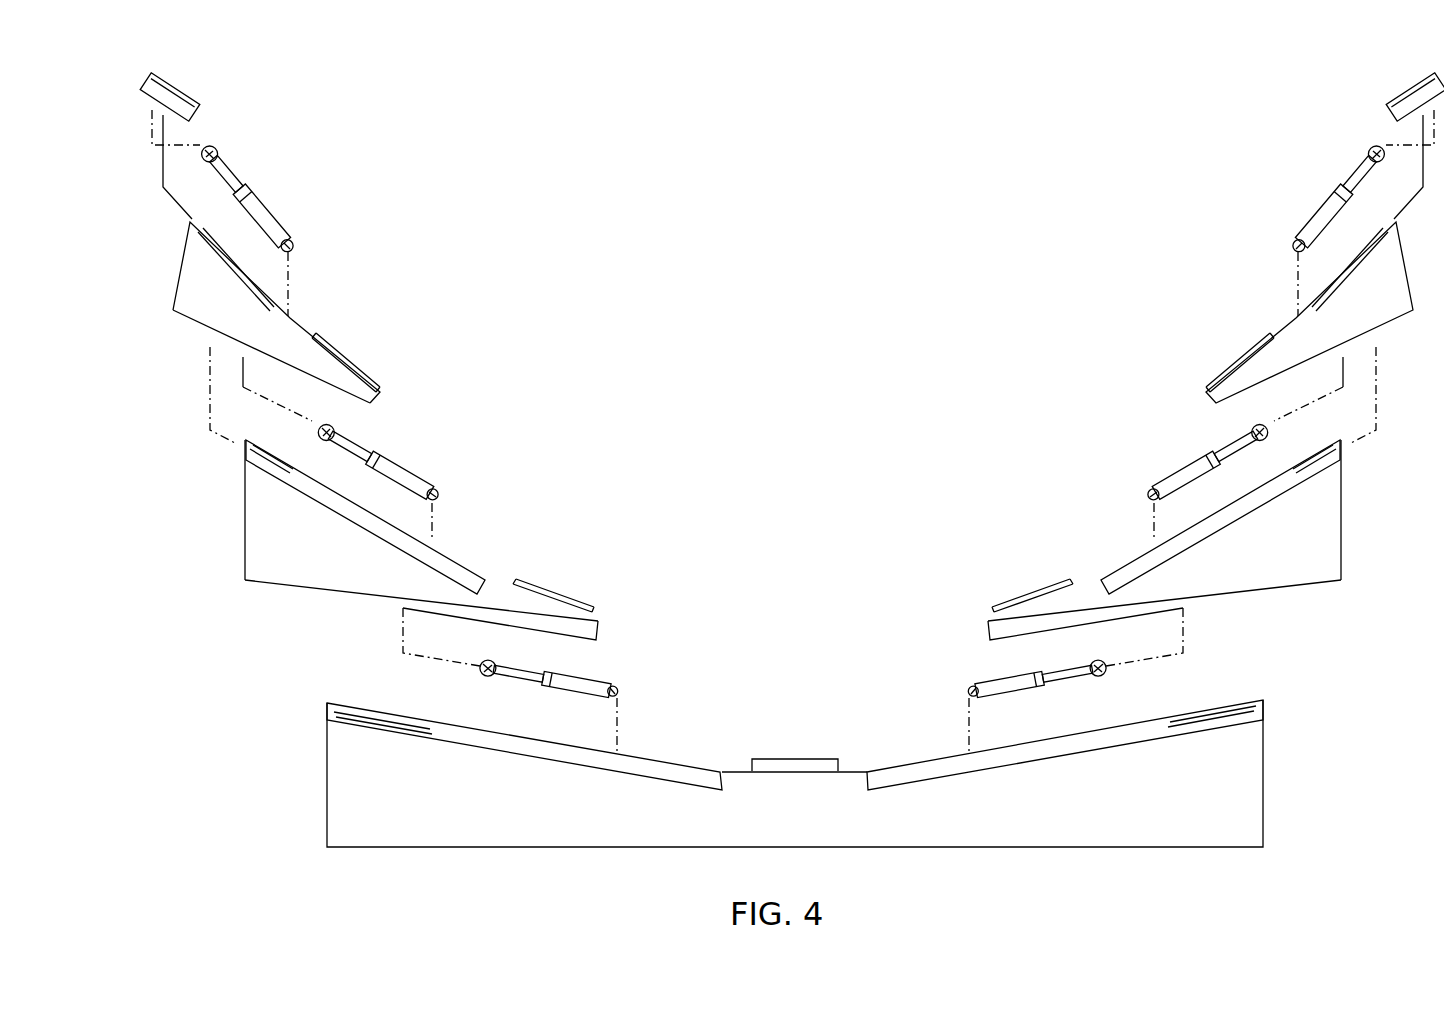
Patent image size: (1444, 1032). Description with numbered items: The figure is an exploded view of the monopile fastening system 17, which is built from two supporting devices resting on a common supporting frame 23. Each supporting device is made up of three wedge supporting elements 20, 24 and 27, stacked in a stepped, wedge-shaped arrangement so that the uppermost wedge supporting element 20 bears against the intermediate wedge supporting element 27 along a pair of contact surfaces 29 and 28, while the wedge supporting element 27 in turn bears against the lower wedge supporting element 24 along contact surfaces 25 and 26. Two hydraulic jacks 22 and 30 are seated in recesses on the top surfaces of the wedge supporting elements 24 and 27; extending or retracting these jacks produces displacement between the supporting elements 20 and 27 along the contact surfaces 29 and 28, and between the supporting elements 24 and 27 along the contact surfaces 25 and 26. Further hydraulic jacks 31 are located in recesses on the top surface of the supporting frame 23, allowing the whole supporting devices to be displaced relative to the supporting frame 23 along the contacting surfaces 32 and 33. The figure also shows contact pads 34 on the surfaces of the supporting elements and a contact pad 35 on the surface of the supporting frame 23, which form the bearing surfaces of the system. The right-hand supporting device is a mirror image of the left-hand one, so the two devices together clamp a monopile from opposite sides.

The monopile fastening system 17 is at (975, 158).
The wedge supporting element 20 is at (157, 77).
The hydraulic jack 22 is at (258, 210).
The supporting frame 23 is at (407, 778).
The wedge supporting element 24 is at (278, 528).
The contact surface 25 is at (492, 577).
The contact surface 26 is at (203, 328).
The wedge supporting element 27 is at (207, 293).
The contact surface 28 is at (289, 317).
The contact surface 29 is at (150, 99).
The hydraulic jack 30 is at (415, 483).
The hydraulic jack 31 is at (565, 680).
The contacting surface 32 is at (283, 588).
The contacting surface 33 is at (667, 746).
The contact pad 34 is at (1386, 83).
The contact pad 35 is at (806, 744).